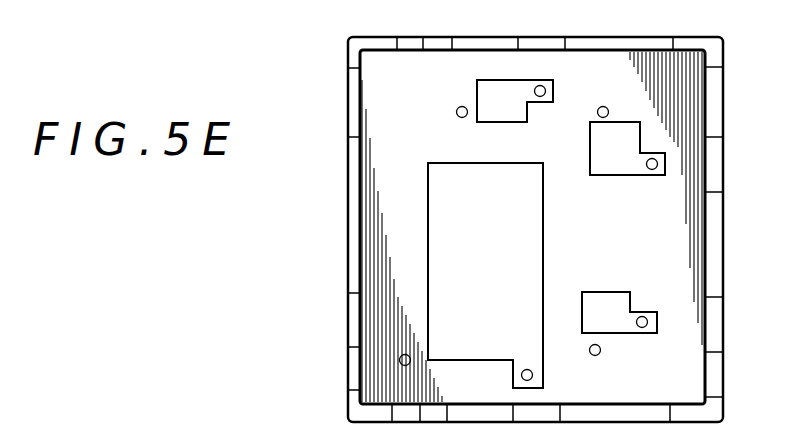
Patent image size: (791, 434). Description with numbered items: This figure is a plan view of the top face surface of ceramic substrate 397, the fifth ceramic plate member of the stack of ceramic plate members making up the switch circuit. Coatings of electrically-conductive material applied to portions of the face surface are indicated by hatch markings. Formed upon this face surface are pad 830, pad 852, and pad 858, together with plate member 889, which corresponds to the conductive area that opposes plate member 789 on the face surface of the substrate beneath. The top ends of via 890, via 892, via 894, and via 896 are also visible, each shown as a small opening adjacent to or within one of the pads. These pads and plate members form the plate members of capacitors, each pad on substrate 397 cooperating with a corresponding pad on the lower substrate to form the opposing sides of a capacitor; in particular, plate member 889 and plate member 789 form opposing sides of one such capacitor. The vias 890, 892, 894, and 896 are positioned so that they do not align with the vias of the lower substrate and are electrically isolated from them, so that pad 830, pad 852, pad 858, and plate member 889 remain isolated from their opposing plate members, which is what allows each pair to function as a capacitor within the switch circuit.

The ceramic substrate 397 is at (313, 278).
The pad 830 is at (508, 93).
The via 890 is at (547, 91).
The pad 858 is at (603, 167).
The via 894 is at (652, 172).
The plate member 889 is at (448, 217).
The via 896 is at (535, 375).
The pad 852 is at (605, 300).
The via 892 is at (642, 328).
The plate member 789 is at (98, 7).